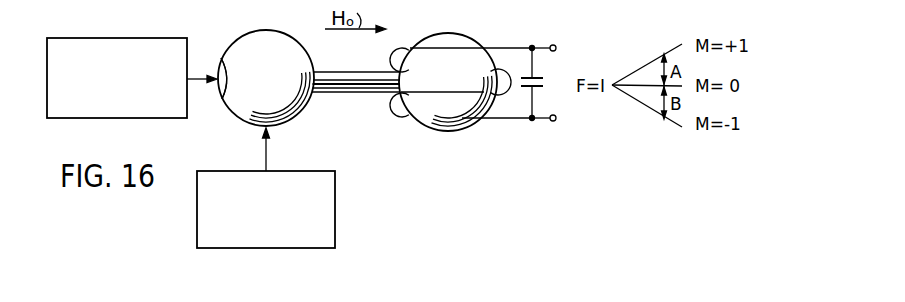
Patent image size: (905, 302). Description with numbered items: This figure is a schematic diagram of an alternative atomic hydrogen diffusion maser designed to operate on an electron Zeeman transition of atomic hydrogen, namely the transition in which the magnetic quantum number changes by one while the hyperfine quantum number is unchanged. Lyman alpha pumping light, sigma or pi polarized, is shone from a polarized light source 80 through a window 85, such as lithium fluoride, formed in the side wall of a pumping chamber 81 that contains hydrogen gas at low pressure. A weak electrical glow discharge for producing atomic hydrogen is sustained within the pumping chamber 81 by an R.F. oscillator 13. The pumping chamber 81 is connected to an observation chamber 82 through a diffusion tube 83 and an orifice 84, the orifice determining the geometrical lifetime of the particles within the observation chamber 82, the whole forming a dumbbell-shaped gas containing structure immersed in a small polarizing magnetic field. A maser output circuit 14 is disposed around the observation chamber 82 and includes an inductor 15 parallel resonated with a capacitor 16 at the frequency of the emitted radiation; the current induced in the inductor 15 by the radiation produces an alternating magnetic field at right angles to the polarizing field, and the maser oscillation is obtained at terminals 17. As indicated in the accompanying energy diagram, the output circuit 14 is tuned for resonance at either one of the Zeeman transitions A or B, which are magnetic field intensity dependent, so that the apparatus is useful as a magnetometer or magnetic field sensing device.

The polarized light source 80 is at (174, 38).
The pumping chamber 81 is at (272, 71).
The observation chamber 82 is at (455, 77).
The diffusion tube 83 is at (337, 76).
The orifice 84 is at (398, 84).
The window 85 is at (223, 86).
The R.F. oscillator 13 is at (335, 203).
The maser output circuit 14 is at (465, 72).
The inductor 15 is at (407, 118).
The capacitor 16 is at (536, 78).
The terminals 17 is at (566, 34).